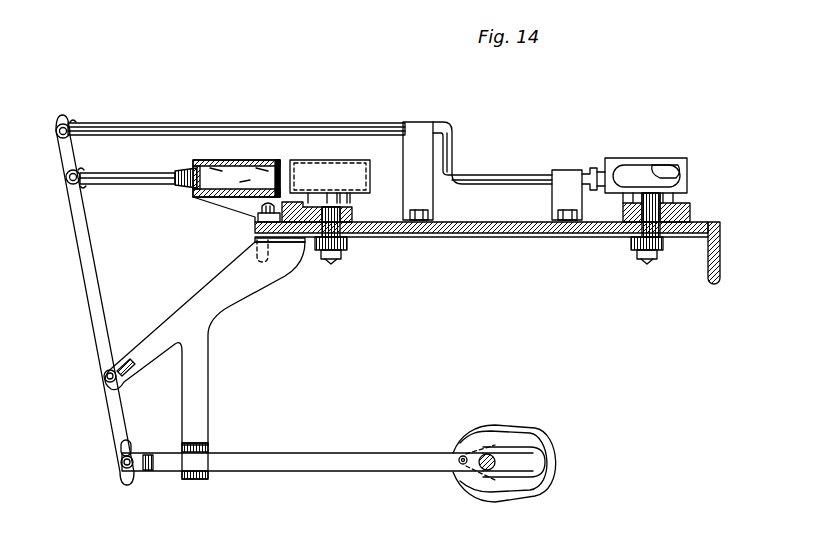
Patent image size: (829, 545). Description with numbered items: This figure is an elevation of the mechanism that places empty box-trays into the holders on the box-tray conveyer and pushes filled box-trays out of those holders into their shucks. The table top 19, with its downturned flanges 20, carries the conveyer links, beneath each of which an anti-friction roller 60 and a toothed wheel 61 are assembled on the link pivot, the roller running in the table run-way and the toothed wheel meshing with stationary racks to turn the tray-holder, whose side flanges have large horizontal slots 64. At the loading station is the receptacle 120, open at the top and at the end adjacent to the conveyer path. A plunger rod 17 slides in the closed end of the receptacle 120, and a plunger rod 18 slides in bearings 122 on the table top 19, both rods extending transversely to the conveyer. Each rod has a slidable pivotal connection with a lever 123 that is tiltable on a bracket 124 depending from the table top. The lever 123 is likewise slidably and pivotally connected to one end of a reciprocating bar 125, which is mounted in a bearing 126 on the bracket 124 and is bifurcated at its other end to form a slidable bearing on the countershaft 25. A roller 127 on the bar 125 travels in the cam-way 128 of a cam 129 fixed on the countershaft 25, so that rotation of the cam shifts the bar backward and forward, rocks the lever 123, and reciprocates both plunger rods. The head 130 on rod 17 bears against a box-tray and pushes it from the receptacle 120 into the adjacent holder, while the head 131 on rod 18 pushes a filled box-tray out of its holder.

The plunger rod 17 is at (148, 184).
The plunger rod 18 is at (482, 175).
The table top 19 is at (516, 237).
The downturned flanges 20 is at (714, 284).
The countershaft 25 is at (484, 478).
The anti-friction roller 60 is at (635, 232).
The toothed wheel 61 is at (662, 250).
The horizontal slots 64 is at (660, 177).
The receptacle 120 is at (214, 160).
The bearings 122 is at (418, 130).
The lever 123 is at (94, 297).
The bracket 124 is at (230, 296).
The reciprocating bar 125 is at (316, 443).
The bearing 126 is at (195, 473).
The roller 127 is at (452, 478).
The cam-way 128 is at (493, 441).
The cam 129 is at (563, 462).
The head 130 is at (195, 165).
The head 131 is at (593, 172).